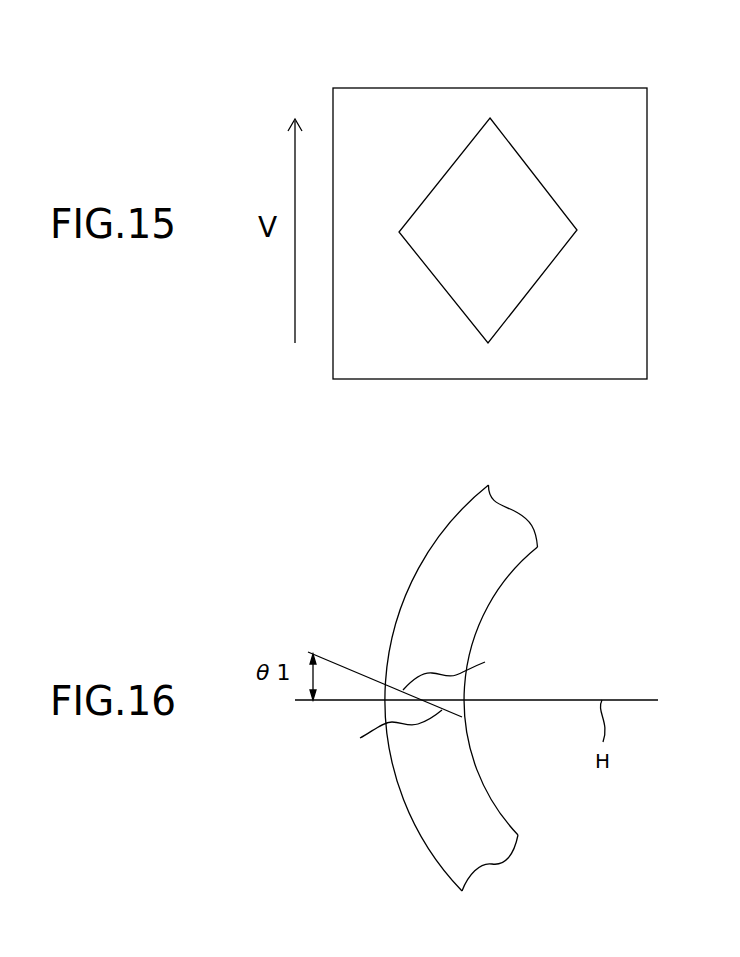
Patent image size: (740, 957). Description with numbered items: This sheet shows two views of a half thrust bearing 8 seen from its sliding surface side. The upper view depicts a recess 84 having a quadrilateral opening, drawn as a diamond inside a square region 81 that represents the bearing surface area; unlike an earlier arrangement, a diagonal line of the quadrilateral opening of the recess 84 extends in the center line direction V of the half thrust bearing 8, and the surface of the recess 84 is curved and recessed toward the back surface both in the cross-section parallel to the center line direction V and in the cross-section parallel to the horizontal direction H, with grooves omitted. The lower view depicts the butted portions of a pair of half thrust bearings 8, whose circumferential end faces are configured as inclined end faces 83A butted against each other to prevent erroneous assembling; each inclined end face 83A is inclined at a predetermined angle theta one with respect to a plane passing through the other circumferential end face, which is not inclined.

In FIG. 15, the display region 81 is at (372, 132).
In FIG. 15, the recess 84 is at (522, 158).
In FIG. 16, the half thrust bearing 8 is at (418, 570).
In FIG. 16, the inclined end faces 83A is at (421, 703).